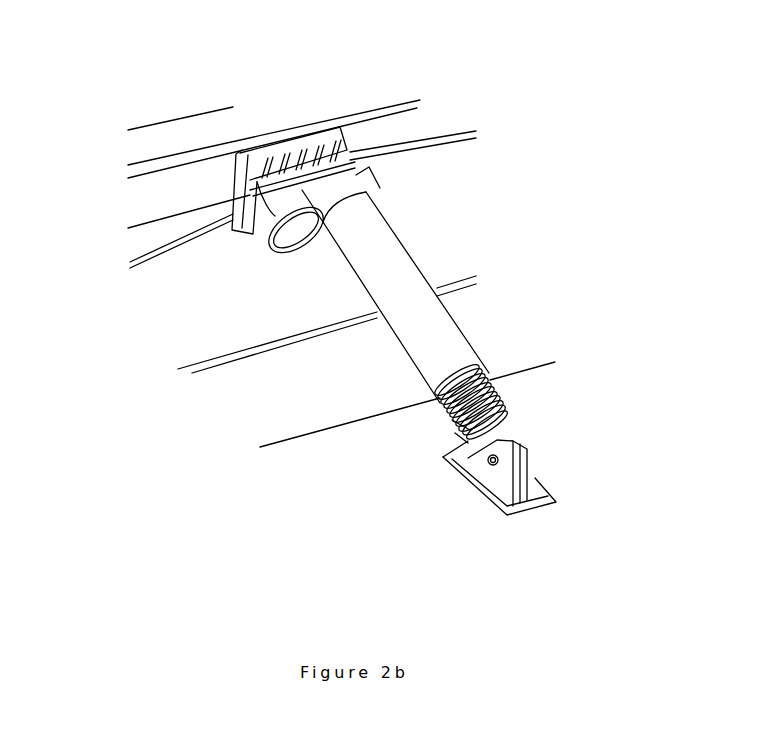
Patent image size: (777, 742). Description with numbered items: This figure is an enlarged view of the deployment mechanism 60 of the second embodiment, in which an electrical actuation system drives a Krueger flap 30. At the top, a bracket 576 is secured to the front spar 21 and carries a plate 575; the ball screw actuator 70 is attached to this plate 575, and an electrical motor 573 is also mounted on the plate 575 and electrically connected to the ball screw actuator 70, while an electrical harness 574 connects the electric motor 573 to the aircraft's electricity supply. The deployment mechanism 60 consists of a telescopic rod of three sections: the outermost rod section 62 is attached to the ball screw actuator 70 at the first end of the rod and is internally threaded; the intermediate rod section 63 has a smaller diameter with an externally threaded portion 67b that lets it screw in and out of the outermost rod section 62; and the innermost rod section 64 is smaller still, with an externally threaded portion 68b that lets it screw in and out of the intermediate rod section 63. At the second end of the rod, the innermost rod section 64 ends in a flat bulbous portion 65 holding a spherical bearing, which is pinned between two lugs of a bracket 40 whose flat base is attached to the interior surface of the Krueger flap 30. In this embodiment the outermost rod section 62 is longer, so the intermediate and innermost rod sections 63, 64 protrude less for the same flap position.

The front spar 21 is at (215, 177).
The Krueger flap 30 is at (437, 512).
The bracket 40 is at (543, 495).
The deployment mechanism 60 is at (443, 302).
The outermost rod section 62 is at (450, 343).
The intermediate rod section 63 is at (487, 393).
The innermost rod section 64 is at (493, 420).
The flat bulbous portion 65 is at (523, 458).
The externally threaded portion 67b is at (452, 420).
The externally threaded portion 68b is at (455, 433).
The ball screw actuator 70 is at (357, 182).
The electrical motor 573 is at (275, 222).
The electrical harness 574 is at (137, 263).
The plate 575 is at (360, 156).
The bracket 576 is at (343, 143).